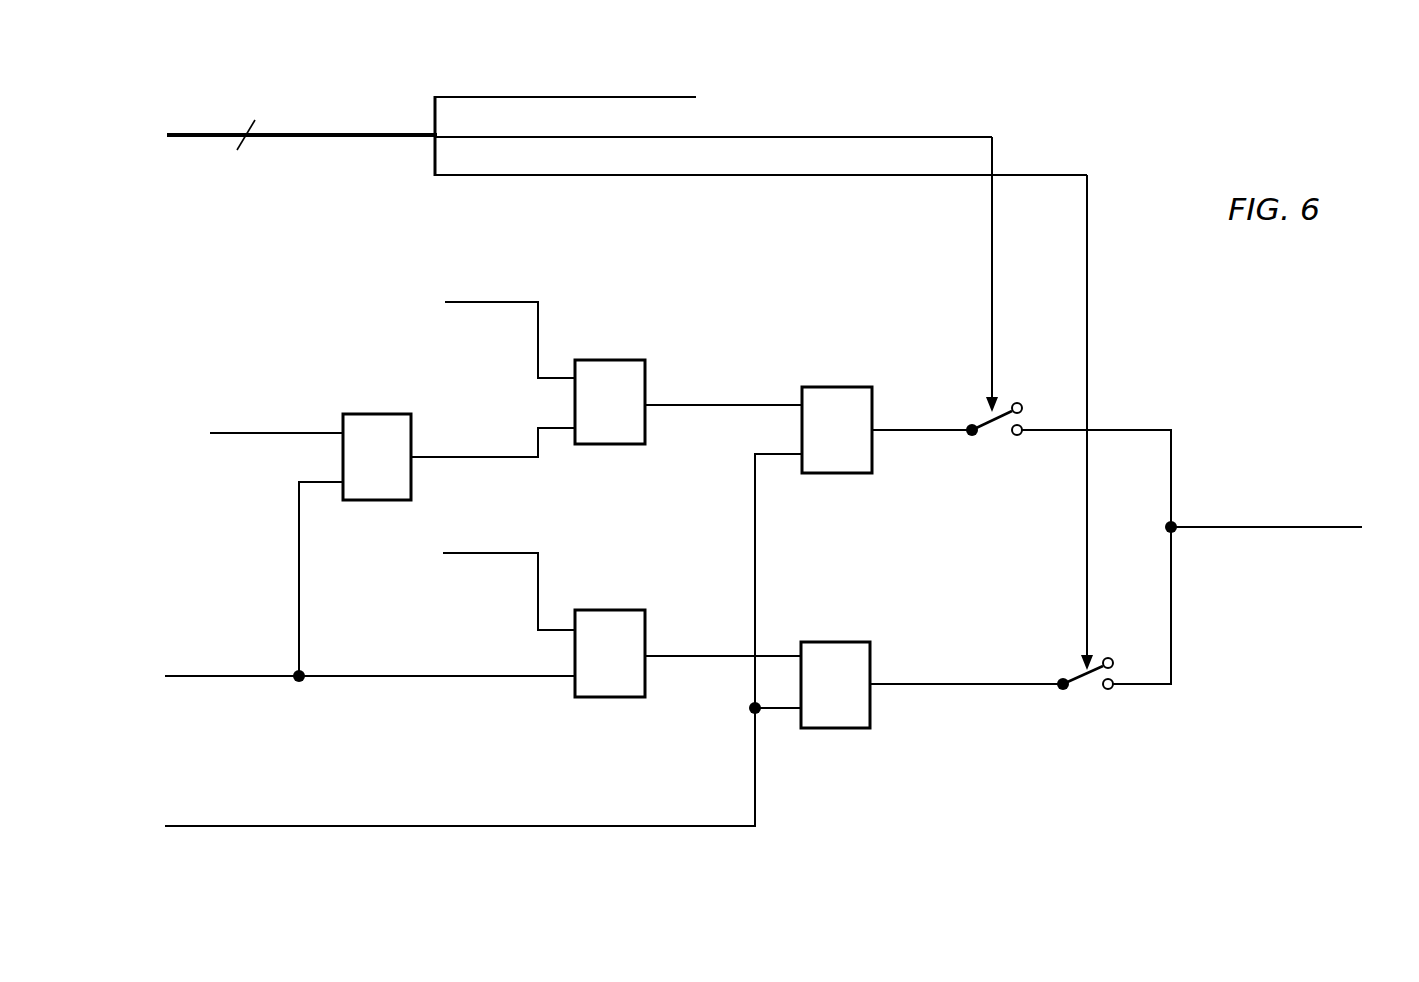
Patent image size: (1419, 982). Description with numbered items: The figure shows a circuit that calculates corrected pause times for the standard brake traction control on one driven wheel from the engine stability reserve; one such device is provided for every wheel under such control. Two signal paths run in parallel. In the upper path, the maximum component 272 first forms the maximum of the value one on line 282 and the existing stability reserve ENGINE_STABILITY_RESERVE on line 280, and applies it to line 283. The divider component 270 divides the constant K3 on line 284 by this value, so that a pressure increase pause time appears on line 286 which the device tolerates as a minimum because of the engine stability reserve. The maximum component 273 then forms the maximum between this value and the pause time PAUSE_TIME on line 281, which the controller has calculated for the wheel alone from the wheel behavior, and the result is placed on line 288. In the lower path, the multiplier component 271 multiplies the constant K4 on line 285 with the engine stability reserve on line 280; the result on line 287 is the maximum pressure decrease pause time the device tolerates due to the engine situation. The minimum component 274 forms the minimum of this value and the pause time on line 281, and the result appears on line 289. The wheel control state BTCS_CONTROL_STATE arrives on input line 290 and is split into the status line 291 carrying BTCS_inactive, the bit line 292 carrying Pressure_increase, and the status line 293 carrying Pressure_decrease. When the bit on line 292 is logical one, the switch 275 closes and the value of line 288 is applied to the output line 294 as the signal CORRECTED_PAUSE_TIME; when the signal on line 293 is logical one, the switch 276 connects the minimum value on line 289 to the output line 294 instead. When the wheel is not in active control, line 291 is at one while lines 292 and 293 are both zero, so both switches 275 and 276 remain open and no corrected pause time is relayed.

The divider component 270 is at (617, 358).
The multiplier component 271 is at (617, 609).
The maximum component 272 is at (380, 413).
The maximum component 273 is at (840, 386).
The minimum component 274 is at (840, 640).
The switch 275 is at (1004, 436).
The switch 276 is at (1091, 690).
The engine stability reserve line 280 is at (218, 674).
The pause time line 281 is at (217, 824).
The constant value line 282 is at (238, 432).
The maximum output line 283 is at (467, 455).
The constant line 284 is at (512, 300).
The constant K4 line 285 is at (512, 551).
The pressure increase pause time line 286 is at (687, 403).
The pressure decrease pause time line 287 is at (687, 654).
The pressure increase output line 288 is at (900, 428).
The pressure decrease output line 289 is at (900, 683).
The input line 290 is at (307, 133).
The BTCS_inactive status line 291 is at (658, 95).
The Pressure_increase bit line 292 is at (961, 135).
The Pressure_decrease status line 293 is at (1049, 173).
The output line 294 is at (1135, 428).